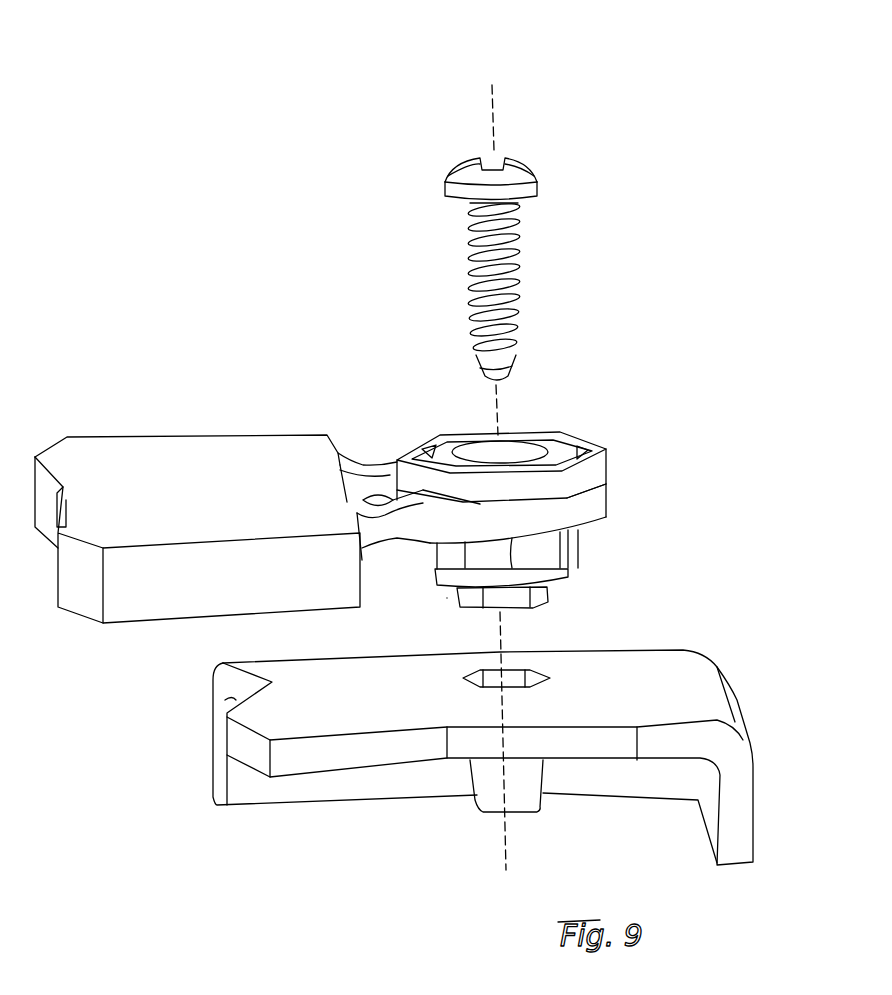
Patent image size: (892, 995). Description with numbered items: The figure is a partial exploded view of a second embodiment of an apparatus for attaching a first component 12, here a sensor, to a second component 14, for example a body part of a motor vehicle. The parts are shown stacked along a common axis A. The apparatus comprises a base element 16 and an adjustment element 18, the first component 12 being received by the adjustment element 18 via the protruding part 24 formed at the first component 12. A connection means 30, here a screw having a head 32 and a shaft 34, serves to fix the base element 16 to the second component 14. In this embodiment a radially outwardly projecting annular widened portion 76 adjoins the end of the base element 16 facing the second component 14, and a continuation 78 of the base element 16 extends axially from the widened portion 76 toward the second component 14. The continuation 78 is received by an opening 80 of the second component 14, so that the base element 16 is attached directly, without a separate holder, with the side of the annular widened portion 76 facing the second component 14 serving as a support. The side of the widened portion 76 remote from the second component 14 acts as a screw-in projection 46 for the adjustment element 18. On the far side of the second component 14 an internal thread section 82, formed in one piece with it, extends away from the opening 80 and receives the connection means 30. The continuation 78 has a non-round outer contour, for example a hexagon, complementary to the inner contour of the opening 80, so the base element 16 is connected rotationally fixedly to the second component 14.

The axis A is at (492, 102).
The first component 12 is at (241, 404).
The second component 14 is at (489, 742).
The base element 16 is at (445, 606).
The adjustment element 18 is at (545, 501).
The protruding part 24 is at (619, 495).
The connection means 30 is at (547, 230).
The head 32 is at (530, 190).
The shaft 34 is at (520, 282).
The screw-in projection 46 is at (437, 577).
The annular widened portion 76 is at (567, 576).
The continuation 78 is at (537, 600).
The opening 80 is at (517, 678).
The internal thread section 82 is at (490, 802).